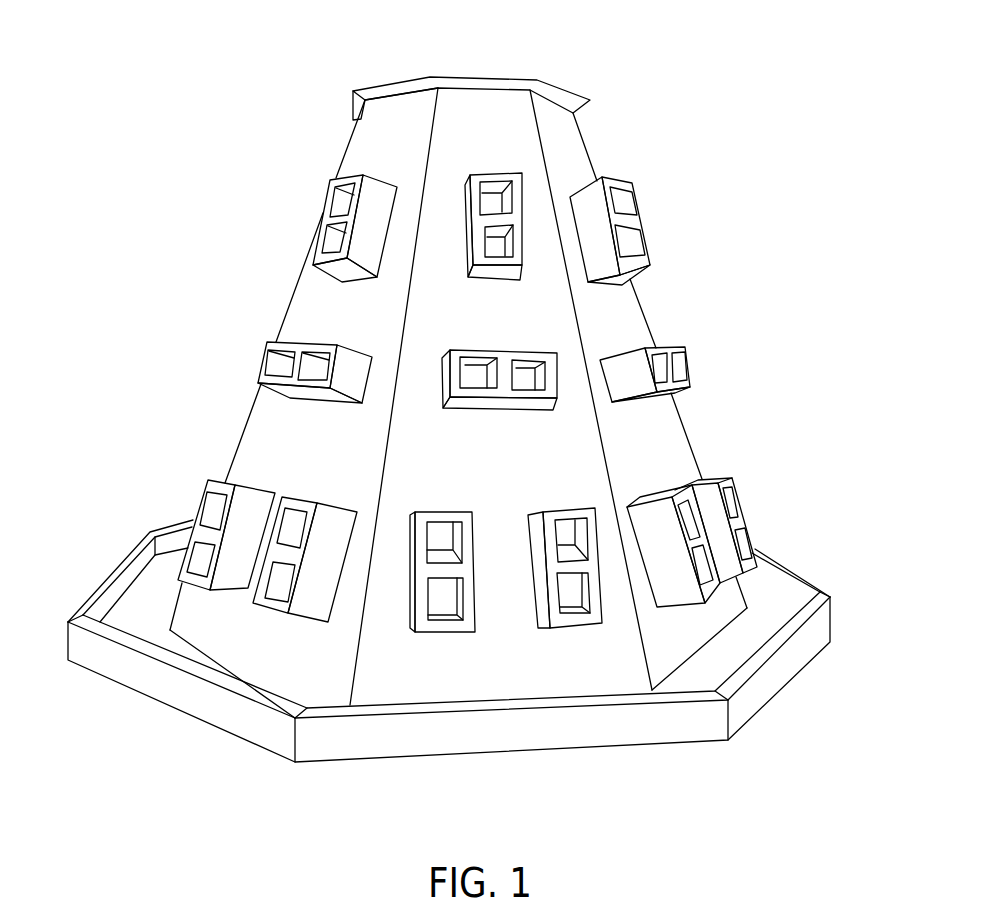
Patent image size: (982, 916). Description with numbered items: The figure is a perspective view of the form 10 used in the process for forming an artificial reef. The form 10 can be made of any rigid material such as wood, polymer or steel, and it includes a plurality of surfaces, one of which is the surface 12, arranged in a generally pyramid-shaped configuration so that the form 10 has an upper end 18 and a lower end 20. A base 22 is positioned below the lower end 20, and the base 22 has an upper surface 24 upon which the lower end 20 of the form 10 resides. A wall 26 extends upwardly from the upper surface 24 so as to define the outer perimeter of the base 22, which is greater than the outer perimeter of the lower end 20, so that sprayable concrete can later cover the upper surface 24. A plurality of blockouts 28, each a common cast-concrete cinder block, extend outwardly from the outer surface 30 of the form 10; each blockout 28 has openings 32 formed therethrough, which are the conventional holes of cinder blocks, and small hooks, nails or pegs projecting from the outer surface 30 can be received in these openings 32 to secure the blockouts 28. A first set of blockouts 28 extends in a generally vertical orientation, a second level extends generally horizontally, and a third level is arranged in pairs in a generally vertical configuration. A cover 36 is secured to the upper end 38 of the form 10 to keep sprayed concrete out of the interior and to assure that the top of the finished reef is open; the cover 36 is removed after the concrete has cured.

The form 10 is at (658, 77).
The surface 12 is at (368, 143).
The upper end 18 is at (513, 92).
The lower end 20 is at (717, 634).
The base 22 is at (788, 662).
The upper surface 24 is at (782, 610).
The wall 26 is at (760, 550).
The blockouts 28 is at (327, 220).
The outer surface 30 is at (305, 298).
The openings 32 is at (618, 202).
The cover 36 is at (360, 98).
The upper end 38 is at (400, 103).